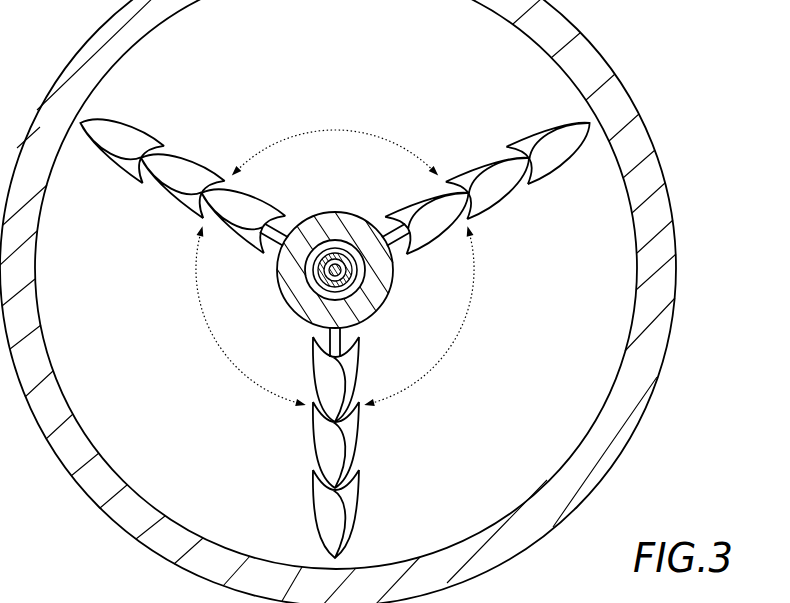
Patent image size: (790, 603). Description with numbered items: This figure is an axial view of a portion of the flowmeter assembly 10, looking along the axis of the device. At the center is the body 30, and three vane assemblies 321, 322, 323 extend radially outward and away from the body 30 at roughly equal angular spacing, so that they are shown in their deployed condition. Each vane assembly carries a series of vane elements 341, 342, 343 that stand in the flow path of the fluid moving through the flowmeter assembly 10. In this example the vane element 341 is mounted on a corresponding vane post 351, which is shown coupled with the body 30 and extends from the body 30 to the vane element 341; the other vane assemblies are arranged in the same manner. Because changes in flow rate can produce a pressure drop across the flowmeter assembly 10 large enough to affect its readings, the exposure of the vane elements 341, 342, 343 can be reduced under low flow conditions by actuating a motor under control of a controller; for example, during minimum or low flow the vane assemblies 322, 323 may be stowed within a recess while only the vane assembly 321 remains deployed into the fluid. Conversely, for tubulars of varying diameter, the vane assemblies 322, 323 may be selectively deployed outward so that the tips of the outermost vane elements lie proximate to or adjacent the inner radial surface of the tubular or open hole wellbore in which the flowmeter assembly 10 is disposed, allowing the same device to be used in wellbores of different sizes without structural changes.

The flowmeter assembly 10 is at (526, 265).
The body 30 is at (390, 288).
The vane assembly 321 is at (213, 211).
The vane assembly 322 is at (336, 442).
The vane assembly 323 is at (487, 183).
The vane element 341 is at (260, 217).
The vane element 342 is at (200, 163).
The vane element 343 is at (147, 110).
The vane post 351 is at (293, 218).